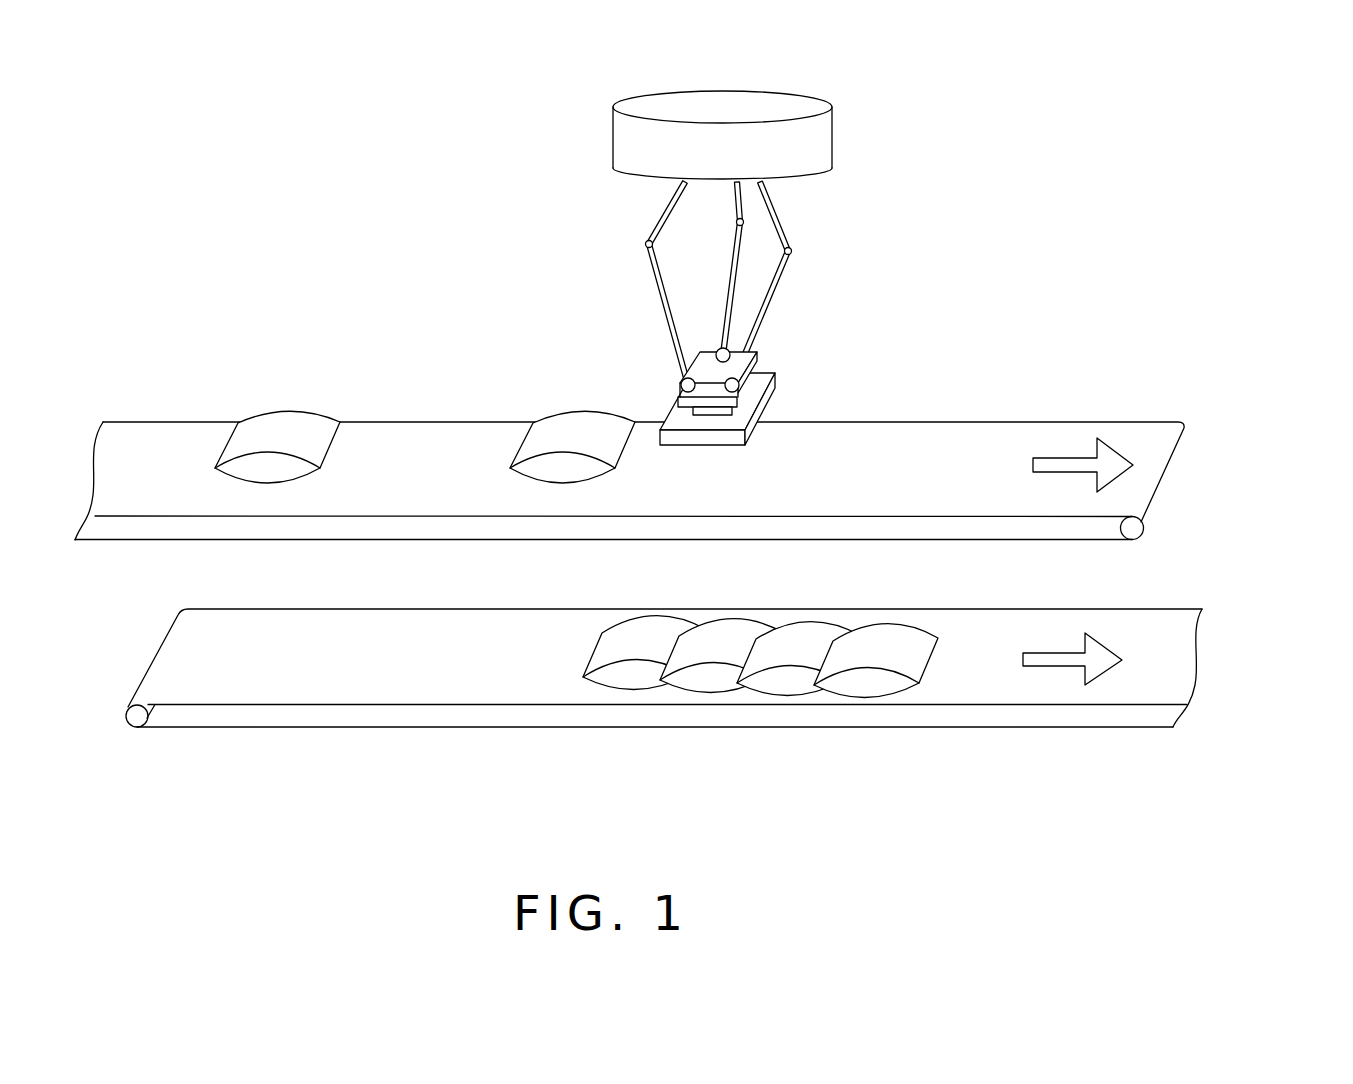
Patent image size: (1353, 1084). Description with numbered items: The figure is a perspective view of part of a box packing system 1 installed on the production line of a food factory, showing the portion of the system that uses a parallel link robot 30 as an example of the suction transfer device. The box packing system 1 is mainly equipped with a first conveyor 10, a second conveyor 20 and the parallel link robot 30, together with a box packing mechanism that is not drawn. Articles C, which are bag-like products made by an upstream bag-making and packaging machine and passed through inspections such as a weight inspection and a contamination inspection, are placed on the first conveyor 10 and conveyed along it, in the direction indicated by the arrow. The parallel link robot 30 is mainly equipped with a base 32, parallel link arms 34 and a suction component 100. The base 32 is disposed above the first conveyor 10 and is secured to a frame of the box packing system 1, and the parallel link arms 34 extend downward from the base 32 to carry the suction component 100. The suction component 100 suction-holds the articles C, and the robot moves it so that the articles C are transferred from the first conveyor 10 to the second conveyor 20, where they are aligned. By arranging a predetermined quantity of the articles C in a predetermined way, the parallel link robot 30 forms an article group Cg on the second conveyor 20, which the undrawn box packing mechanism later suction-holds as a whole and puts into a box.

The box packing system 1 is at (1165, 286).
The first conveyor 10 is at (1175, 493).
The second conveyor 20 is at (1209, 676).
The parallel link robot 30 is at (586, 136).
The base 32 is at (835, 132).
The parallel link arms 34 is at (673, 312).
The suction component 100 is at (788, 365).
The articles C is at (277, 435).
The article group Cg is at (795, 630).